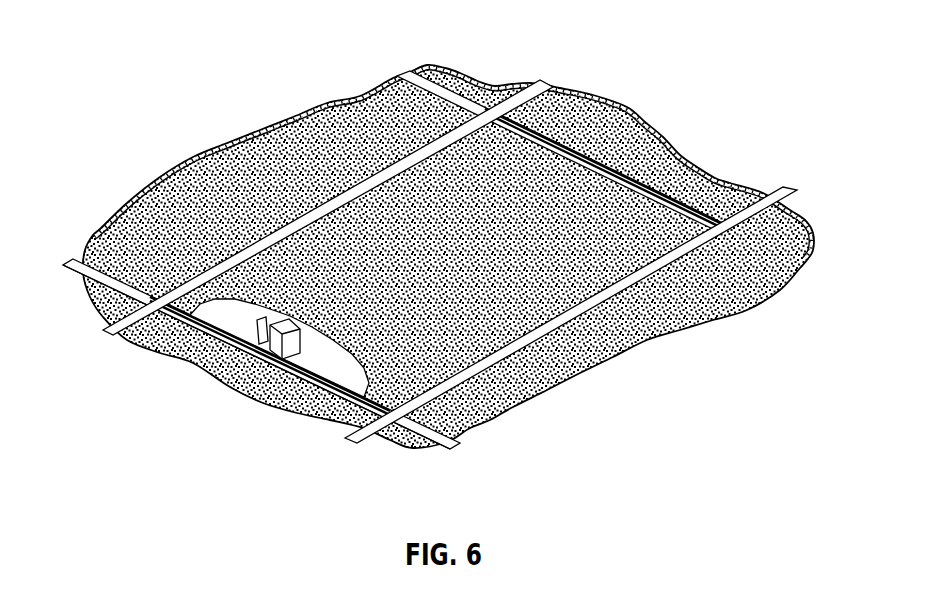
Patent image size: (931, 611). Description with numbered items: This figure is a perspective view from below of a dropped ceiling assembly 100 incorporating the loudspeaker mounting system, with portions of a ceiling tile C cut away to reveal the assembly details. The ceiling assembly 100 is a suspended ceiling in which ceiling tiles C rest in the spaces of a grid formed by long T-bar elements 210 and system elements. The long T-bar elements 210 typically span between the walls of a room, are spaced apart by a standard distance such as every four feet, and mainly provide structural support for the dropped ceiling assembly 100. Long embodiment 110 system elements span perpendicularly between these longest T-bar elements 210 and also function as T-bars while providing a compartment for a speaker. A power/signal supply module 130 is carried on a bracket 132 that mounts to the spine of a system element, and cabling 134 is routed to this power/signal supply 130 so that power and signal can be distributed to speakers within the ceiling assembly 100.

The ceiling assembly 100 is at (448, 240).
The long embodiment 110 is at (647, 183).
The power/signal supply module 130 is at (297, 357).
The bracket 132 is at (236, 345).
The cabling 134 is at (342, 358).
The long T-bar element 210 is at (267, 235).
The ceiling tile C is at (287, 130).